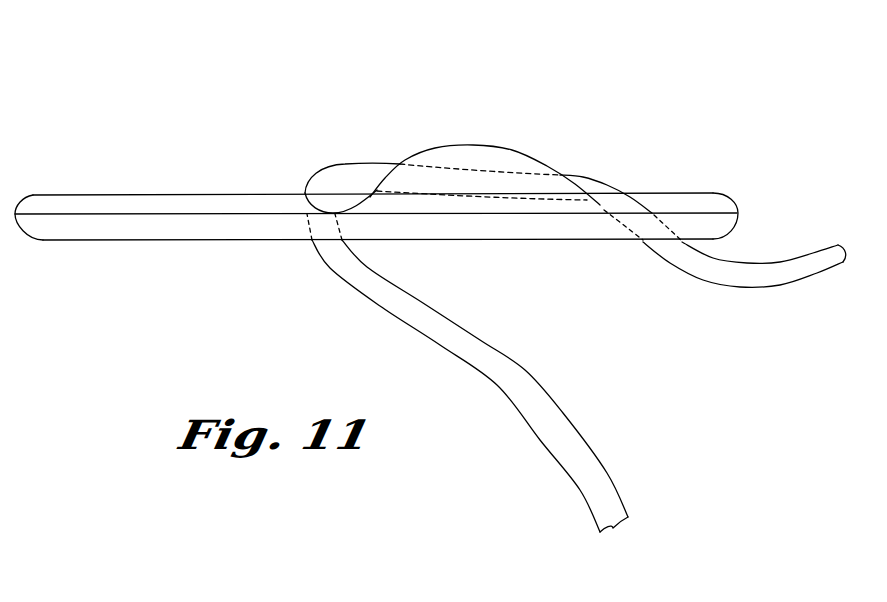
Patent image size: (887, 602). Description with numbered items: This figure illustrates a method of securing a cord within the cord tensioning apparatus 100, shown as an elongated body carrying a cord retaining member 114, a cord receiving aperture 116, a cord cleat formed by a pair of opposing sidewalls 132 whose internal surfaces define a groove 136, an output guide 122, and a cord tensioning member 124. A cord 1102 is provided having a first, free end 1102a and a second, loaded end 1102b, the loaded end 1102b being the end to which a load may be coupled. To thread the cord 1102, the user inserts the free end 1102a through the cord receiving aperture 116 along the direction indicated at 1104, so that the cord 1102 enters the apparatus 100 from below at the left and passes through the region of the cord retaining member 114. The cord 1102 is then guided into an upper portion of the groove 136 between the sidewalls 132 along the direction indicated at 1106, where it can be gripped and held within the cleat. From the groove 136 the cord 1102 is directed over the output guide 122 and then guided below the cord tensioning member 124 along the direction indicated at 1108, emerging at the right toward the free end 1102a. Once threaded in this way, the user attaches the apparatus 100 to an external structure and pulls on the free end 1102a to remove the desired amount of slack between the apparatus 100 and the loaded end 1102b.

The cord tensioning apparatus 100 is at (638, 70).
The cord retaining member 114 is at (50, 218).
The cord receiving aperture 116 is at (167, 211).
The output guide 122 is at (597, 204).
The cord tensioning member 124 is at (727, 221).
The sidewalls 132 is at (503, 157).
The groove 136 is at (380, 177).
The cord 1102 is at (605, 465).
The first end (free end) of cord 1102a is at (865, 243).
The second end (loaded end) of cord 1102b is at (613, 523).
The direction of insertion through cord receiving aperture 1104 is at (510, 412).
The direction into groove 1106 is at (523, 98).
The direction below cord tensioning member 1108 is at (737, 302).